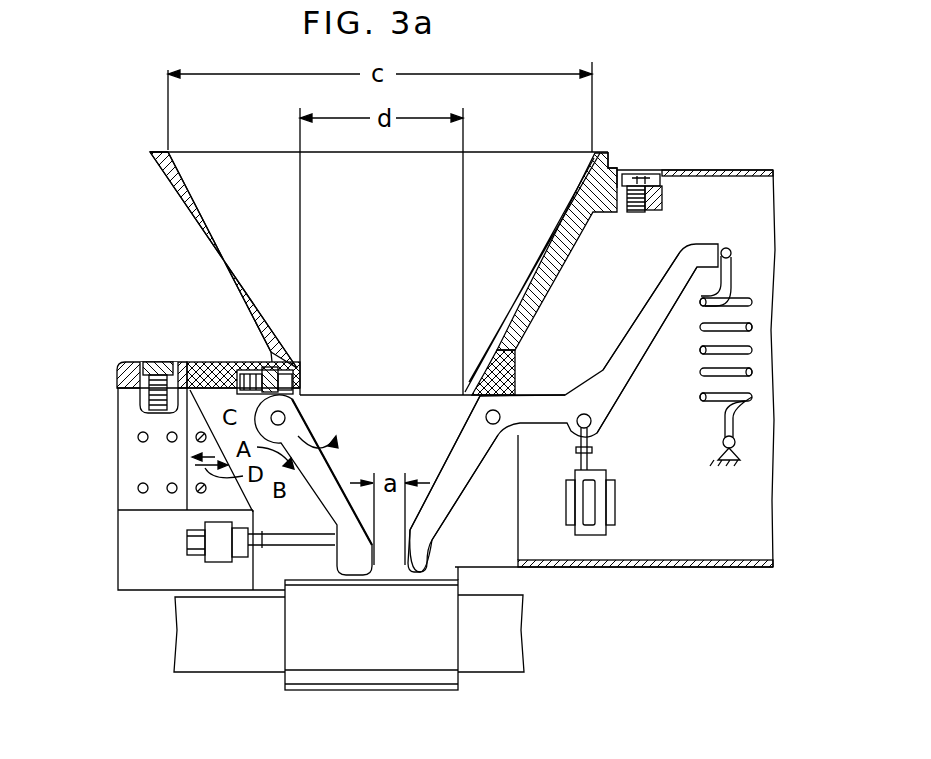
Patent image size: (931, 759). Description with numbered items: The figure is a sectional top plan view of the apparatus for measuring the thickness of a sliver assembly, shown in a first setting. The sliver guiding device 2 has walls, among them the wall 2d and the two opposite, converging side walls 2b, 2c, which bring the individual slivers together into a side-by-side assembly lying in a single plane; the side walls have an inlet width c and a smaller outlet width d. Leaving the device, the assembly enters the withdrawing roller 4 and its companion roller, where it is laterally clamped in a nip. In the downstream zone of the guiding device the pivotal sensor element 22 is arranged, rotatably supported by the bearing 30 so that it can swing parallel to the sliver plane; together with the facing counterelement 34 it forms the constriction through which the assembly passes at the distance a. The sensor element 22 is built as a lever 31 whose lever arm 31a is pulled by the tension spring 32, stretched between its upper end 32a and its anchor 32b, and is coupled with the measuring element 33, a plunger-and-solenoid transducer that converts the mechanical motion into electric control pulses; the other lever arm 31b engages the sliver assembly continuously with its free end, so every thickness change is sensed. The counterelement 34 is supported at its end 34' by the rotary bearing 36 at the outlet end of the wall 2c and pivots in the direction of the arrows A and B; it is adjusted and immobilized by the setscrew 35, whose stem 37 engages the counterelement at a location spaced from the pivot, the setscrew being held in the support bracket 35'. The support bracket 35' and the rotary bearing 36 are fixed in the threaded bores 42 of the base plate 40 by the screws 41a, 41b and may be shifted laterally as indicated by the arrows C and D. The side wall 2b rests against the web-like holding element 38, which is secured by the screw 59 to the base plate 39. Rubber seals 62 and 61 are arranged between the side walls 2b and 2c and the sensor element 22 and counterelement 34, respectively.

The sliver guiding device 2 is at (212, 268).
The side wall 2b is at (612, 160).
The side wall 2c is at (180, 186).
The wall 2d is at (505, 200).
The withdrawing roller 4 is at (427, 644).
The sensor element 22 is at (463, 482).
The bearing 30 is at (500, 423).
The lever 31 is at (550, 408).
The lever arm 31a is at (655, 312).
The lever arm 31b is at (437, 483).
The tension spring 32 is at (702, 372).
The spring upper end 32a is at (731, 252).
The spring anchor 32b is at (722, 442).
The measuring element 33 is at (590, 504).
The counterelement 34 is at (313, 485).
The end of counterelement 34' is at (337, 368).
The setscrew 35 is at (146, 551).
The support bracket 35' is at (185, 578).
The rotary bearing 36 is at (207, 360).
The stem 37 is at (310, 541).
The holding element 38 is at (573, 238).
The base plate 39 is at (712, 205).
The base plate 40 is at (182, 361).
The screw 41a is at (197, 432).
The screw 41b is at (197, 490).
The threaded bores 42 is at (138, 438).
The screw 59 is at (643, 175).
The rubber seal 61 is at (247, 362).
The rubber seal 62 is at (508, 361).